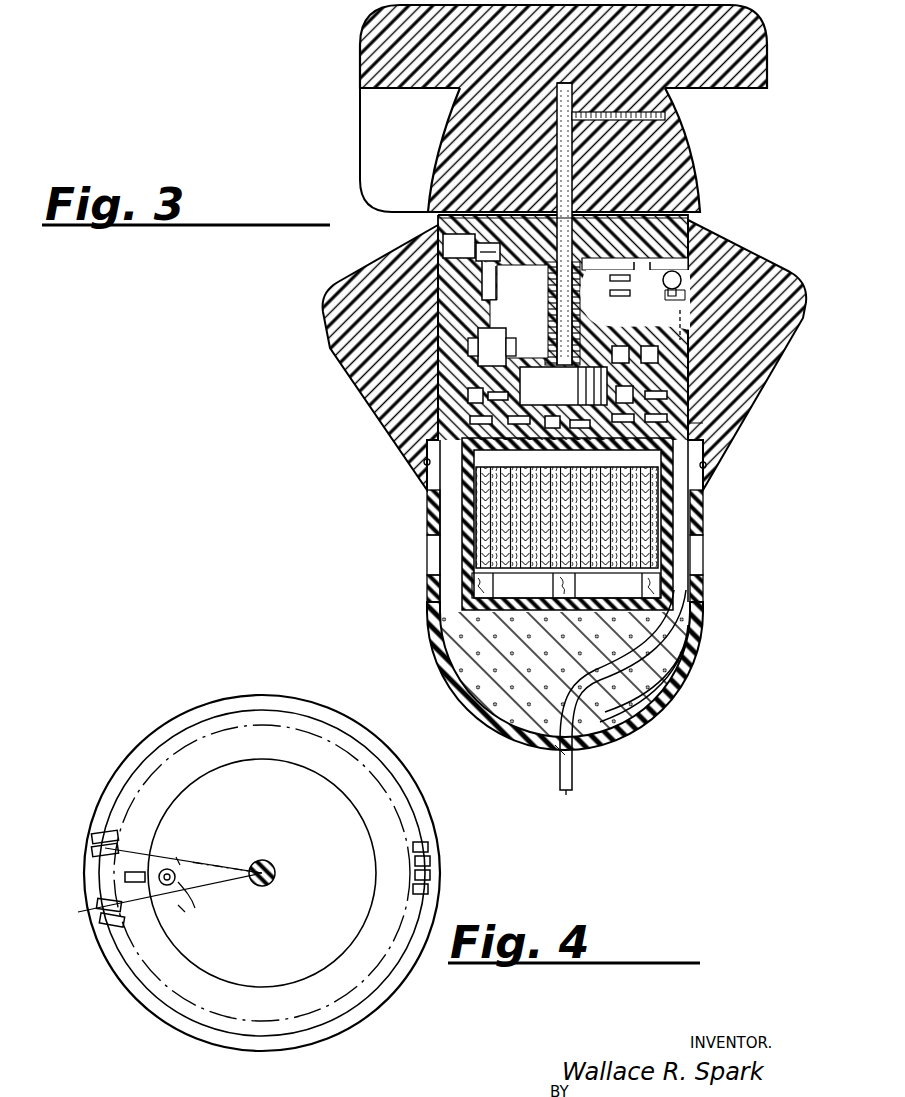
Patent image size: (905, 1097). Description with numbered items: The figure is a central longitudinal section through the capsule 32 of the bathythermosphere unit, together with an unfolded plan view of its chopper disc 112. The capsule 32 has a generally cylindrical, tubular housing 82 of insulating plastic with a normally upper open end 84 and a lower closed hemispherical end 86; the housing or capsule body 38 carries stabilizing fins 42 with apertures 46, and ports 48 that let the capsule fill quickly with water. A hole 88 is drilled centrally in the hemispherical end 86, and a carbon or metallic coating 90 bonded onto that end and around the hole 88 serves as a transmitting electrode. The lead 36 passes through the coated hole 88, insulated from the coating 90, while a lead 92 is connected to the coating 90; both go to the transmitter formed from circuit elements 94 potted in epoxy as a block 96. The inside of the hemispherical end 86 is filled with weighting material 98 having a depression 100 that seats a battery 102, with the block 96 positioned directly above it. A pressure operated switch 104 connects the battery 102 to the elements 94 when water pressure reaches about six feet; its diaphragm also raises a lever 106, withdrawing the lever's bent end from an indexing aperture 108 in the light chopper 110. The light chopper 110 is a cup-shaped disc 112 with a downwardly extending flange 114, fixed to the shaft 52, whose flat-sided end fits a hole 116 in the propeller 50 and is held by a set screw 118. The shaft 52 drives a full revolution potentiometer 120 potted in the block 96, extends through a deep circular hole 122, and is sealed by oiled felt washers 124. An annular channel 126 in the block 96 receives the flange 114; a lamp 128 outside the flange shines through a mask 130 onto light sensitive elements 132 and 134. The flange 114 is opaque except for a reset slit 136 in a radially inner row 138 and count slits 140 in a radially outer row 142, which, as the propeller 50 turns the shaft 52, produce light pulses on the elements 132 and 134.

In FIG. 3, the capsule 32 is at (427, 584).
In FIG. 3, the lead 36 is at (574, 768).
In FIG. 3, the capsule body 38 is at (700, 226).
In FIG. 3, the stabilizing fins 42 is at (338, 350).
In FIG. 3, the apertures 46 is at (424, 462).
In FIG. 3, the ports 48 is at (427, 553).
In FIG. 3, the propeller 50 is at (360, 86).
In FIG. 3, the shaft 52 is at (557, 152).
In FIG. 4, the shaft 52 is at (272, 866).
In FIG. 3, the housing 82 is at (427, 496).
In FIG. 3, the upper open end 84 is at (430, 219).
In FIG. 3, the hemispherical end 86 is at (466, 690).
In FIG. 3, the hole 88 is at (530, 765).
In FIG. 3, the coating 90 is at (676, 708).
In FIG. 3, the lead 92 is at (680, 668).
In FIG. 3, the circuit elements 94 is at (624, 386).
In FIG. 3, the block 96 is at (720, 423).
In FIG. 3, the weighting material 98 is at (470, 660).
In FIG. 3, the depression 100 is at (455, 600).
In FIG. 3, the battery 102 is at (668, 556).
In FIG. 3, the pressure operated switch 104 is at (398, 252).
In FIG. 3, the lever 106 is at (498, 242).
In FIG. 4, the lever 106 is at (207, 887).
In FIG. 3, the indexing aperture 108 is at (512, 269).
In FIG. 4, the indexing aperture 108 is at (178, 872).
In FIG. 3, the light chopper 110 is at (690, 172).
In FIG. 4, the light chopper 110 is at (190, 702).
In FIG. 3, the disc 112 is at (519, 311).
In FIG. 4, the disc 112 is at (215, 968).
In FIG. 3, the flange 114 is at (470, 288).
In FIG. 4, the flange 114 is at (140, 744).
In FIG. 3, the hole 116 is at (557, 122).
In FIG. 3, the set screw 118 is at (666, 120).
In FIG. 3, the full revolution potentiometer 120 is at (561, 374).
In FIG. 3, the deep circular hole 122 is at (511, 339).
In FIG. 3, the felt, oiled washers 124 is at (612, 360).
In FIG. 3, the annular channel 126 is at (667, 311).
In FIG. 3, the lamp 128 is at (682, 281).
In FIG. 3, the mask 130 is at (630, 258).
In FIG. 3, the light sensitive element 132 is at (635, 261).
In FIG. 3, the light sensitive element 134 is at (628, 305).
In FIG. 4, the slit 136 is at (94, 850).
In FIG. 4, the radially inner row 138 is at (125, 878).
In FIG. 4, the slits 140 is at (100, 920).
In FIG. 4, the radially outer row 142 is at (420, 825).